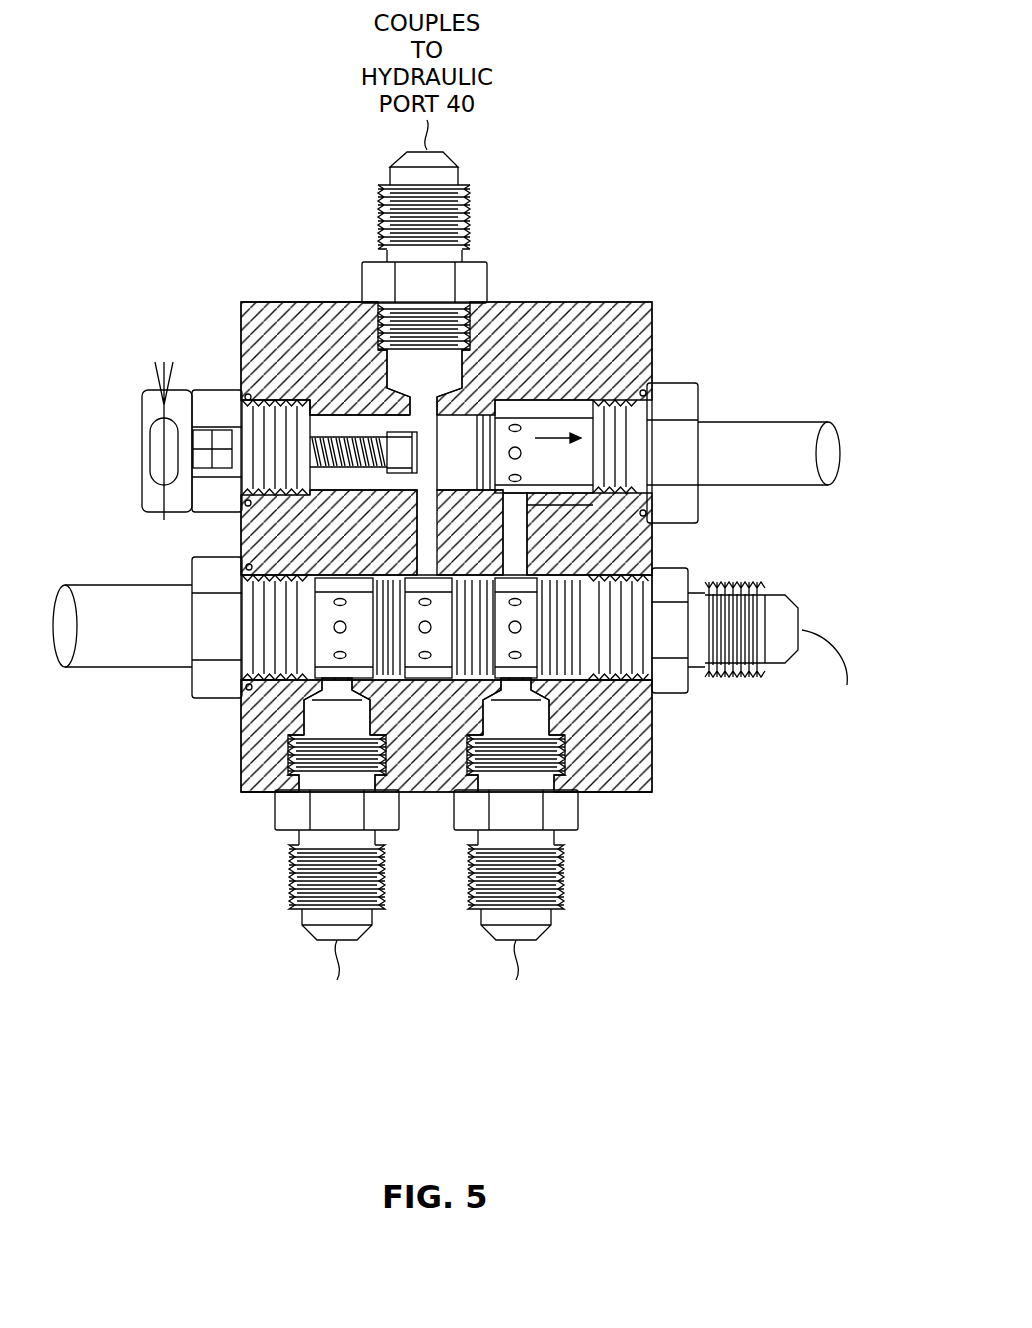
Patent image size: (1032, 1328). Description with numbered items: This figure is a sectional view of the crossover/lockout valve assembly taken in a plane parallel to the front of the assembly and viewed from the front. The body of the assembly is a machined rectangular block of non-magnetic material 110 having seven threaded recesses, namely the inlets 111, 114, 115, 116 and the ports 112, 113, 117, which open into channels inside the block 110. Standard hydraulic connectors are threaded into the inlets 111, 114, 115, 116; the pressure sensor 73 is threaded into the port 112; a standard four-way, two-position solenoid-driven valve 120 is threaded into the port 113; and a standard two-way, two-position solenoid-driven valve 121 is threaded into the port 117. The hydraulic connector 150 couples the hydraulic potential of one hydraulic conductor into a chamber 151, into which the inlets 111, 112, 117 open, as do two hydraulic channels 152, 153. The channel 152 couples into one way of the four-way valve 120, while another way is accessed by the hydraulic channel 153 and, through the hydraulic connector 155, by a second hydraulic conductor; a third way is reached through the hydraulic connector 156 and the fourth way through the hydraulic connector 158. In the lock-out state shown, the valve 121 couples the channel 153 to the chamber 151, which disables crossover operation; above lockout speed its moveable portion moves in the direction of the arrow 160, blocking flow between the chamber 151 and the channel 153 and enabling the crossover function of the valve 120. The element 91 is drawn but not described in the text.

The pressure sensor 73 is at (218, 388).
The cap 91 is at (142, 418).
The block of non-magnetic material 110 is at (622, 302).
The inlet 111 is at (388, 328).
The port 112 is at (278, 400).
The port 113 is at (277, 687).
The inlet 114 is at (287, 763).
The inlet 115 is at (567, 763).
The inlet 116 is at (607, 680).
The port 117 is at (607, 393).
The four-way, two-position solenoid-driven valve 120 is at (192, 683).
The two-way, two-position solenoid-driven valve 121 is at (700, 408).
The hydraulic connector 150 is at (488, 264).
The chamber 151 is at (465, 463).
The hydraulic channel 152 is at (423, 545).
The hydraulic channel 153 is at (517, 550).
The hydraulic connector 155 is at (563, 870).
The hydraulic connector 156 is at (292, 872).
The hydraulic connector 158 is at (763, 590).
The arrow 160 is at (575, 475).